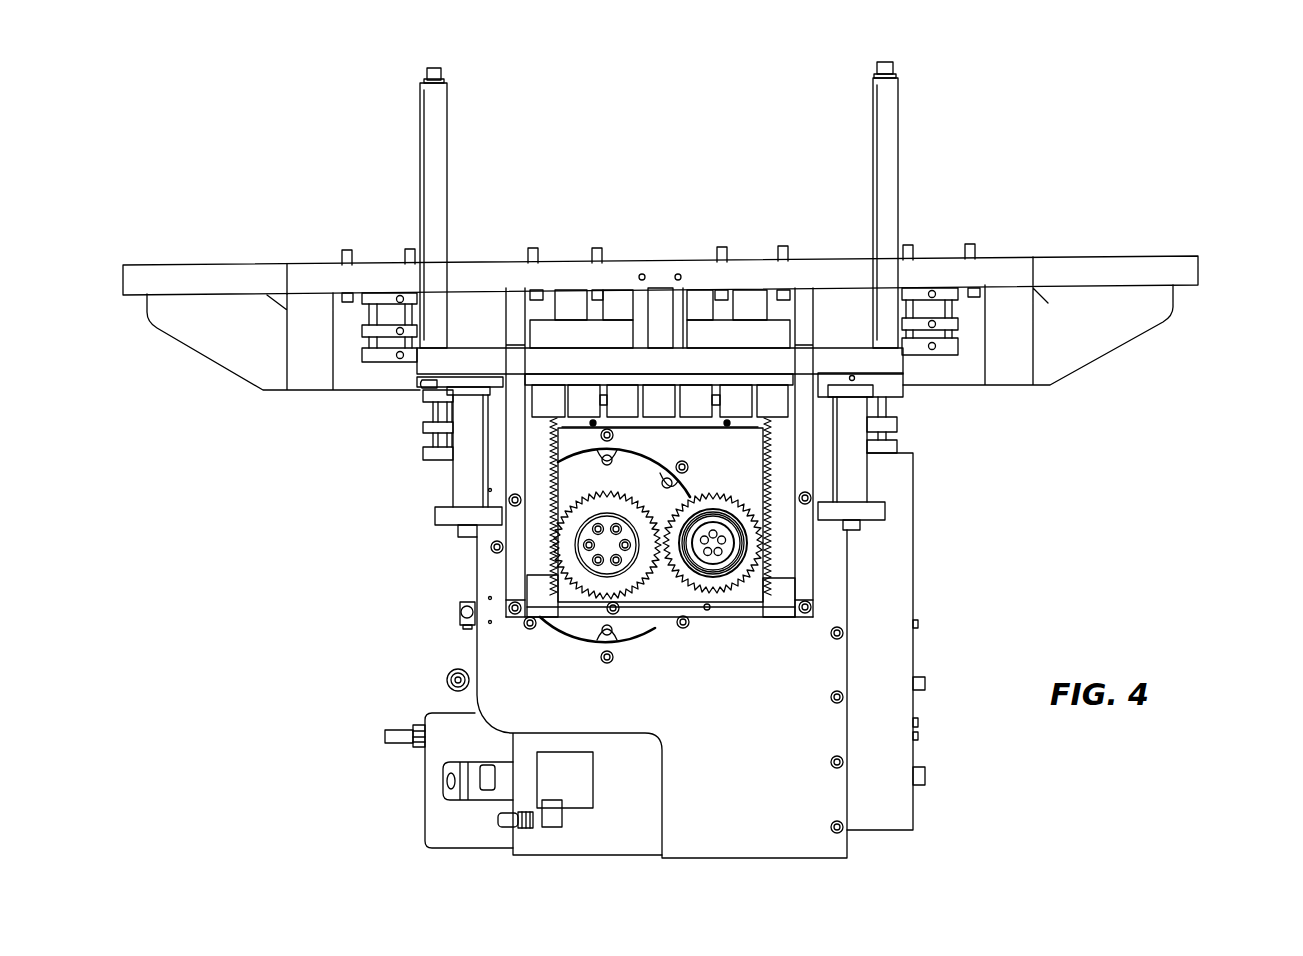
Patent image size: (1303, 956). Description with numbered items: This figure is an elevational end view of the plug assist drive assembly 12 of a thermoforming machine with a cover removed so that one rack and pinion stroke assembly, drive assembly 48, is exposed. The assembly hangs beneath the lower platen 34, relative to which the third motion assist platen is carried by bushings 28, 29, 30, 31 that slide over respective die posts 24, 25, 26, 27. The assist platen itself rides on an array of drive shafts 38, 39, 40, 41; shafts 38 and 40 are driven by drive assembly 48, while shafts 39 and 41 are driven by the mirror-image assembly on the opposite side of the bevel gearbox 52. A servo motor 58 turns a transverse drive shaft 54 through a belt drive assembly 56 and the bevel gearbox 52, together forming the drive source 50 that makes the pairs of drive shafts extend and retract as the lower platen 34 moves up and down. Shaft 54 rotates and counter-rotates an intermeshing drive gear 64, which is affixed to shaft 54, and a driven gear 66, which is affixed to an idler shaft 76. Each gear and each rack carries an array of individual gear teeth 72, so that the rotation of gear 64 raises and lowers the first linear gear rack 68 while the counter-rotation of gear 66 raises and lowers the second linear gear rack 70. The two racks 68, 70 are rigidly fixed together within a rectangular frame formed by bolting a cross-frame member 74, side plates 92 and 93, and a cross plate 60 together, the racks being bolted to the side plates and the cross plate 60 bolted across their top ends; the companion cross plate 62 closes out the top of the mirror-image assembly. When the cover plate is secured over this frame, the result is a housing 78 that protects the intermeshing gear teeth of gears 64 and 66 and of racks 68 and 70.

The plug assist drive assembly 12 is at (1216, 126).
The drive shaft 38 is at (388, 208).
The drive shaft 39 is at (420, 157).
The drive shaft 40 is at (934, 205).
The drive shaft 41 is at (898, 148).
The cross plate 60 is at (660, 291).
The cross plate 62 is at (473, 363).
The lower platen 34 is at (277, 393).
The bushing 30 is at (396, 376).
The bushing 28 is at (473, 393).
The bushing 31 is at (925, 370).
The bushing 29 is at (847, 388).
The die post 26 is at (396, 471).
The die post 24 is at (460, 480).
The die post 27 is at (910, 463).
The die post 25 is at (857, 478).
The transverse drive shaft 54 is at (592, 531).
The drive gear 64 is at (623, 570).
The driven gear 66 is at (713, 516).
The idler shaft 76 is at (735, 530).
The housing 78 is at (818, 549).
The linear gear rack 70 is at (783, 560).
The bevel gearbox 52 is at (467, 567).
The drive source 50 is at (424, 607).
The linear gear rack 68 is at (538, 563).
The side plate 93 is at (515, 620).
The gear teeth 72 is at (677, 580).
The cross-frame member 74 is at (720, 612).
The side plate 92 is at (805, 618).
The drive assembly 48 is at (740, 615).
The belt drive assembly 56 is at (918, 817).
The servo motor 58 is at (467, 848).